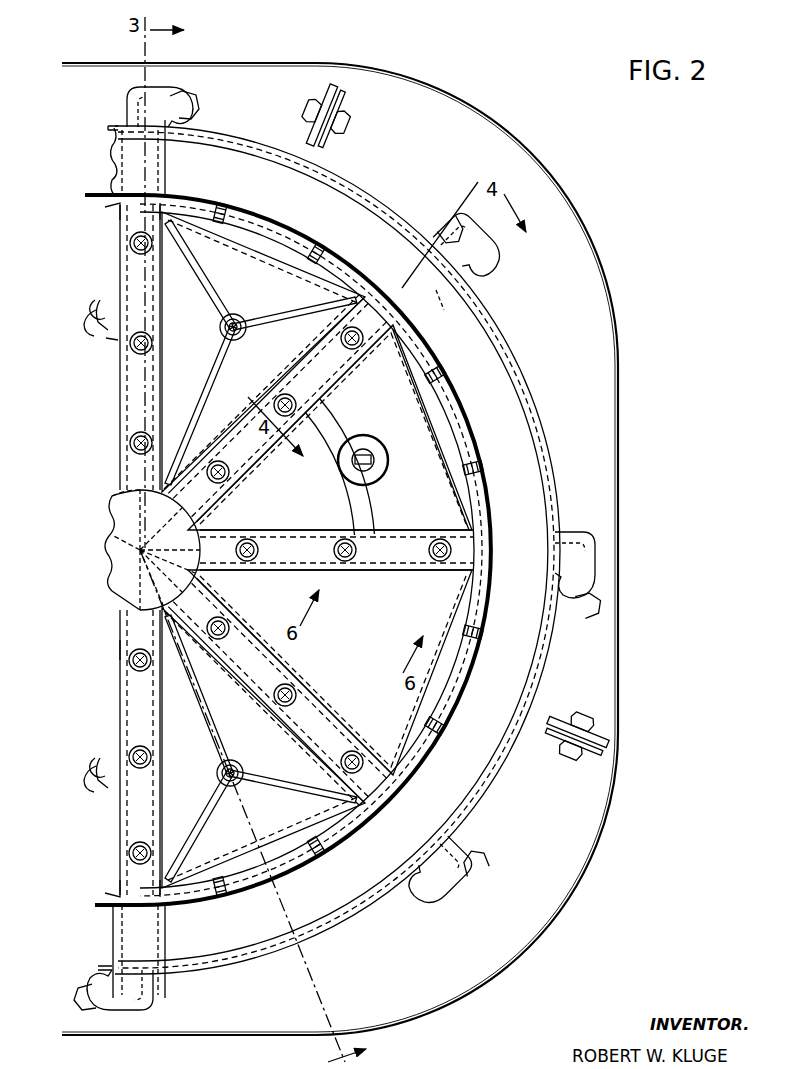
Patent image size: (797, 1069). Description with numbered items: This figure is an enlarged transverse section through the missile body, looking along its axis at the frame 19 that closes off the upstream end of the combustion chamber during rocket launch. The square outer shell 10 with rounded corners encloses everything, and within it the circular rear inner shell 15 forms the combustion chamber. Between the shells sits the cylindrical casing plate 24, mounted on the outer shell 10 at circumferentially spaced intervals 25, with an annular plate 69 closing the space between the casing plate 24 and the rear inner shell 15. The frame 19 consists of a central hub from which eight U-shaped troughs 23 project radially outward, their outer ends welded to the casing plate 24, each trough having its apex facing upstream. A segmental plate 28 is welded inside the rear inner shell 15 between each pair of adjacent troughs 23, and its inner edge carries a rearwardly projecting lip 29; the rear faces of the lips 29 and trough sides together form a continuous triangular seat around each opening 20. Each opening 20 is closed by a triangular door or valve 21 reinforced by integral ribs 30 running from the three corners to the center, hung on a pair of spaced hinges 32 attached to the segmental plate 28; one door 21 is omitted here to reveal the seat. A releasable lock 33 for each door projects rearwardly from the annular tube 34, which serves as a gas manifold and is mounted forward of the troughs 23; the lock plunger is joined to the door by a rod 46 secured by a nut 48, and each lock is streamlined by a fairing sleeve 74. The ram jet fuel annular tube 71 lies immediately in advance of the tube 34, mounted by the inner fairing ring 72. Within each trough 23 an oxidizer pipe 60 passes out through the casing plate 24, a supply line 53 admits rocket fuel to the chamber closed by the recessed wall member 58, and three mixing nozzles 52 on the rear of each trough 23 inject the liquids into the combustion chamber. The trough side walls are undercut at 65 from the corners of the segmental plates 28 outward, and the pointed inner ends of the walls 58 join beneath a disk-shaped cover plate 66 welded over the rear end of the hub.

The outer shell 10 is at (465, 95).
The rear inner shell 15 is at (432, 764).
The frame 19 is at (118, 644).
The openings 20 is at (352, 370).
The doors or valves 21 is at (263, 550).
The U-shaped troughs 23 is at (120, 372).
The cylindrical casing plate 24 is at (110, 128).
The mounting of casing plate 25 is at (338, 128).
The segmental plate 28 is at (275, 238).
The lip 29 is at (446, 440).
The reinforcing ribs 30 is at (270, 306).
The hinges 32 is at (440, 725).
The releasable lock 33 is at (380, 452).
The annular tube 34 is at (385, 510).
The rod 46 is at (222, 332).
The nut 48 is at (218, 778).
The mixing nozzles 52 is at (132, 252).
The supply line 53 is at (182, 103).
The wall member 58 is at (133, 396).
The pipe 60 is at (150, 90).
The undercuts 65 is at (448, 313).
The cover plate 66 is at (112, 538).
The annular plate 69 is at (112, 176).
The annular tube 71 is at (86, 318).
The inner fairing ring 72 is at (106, 340).
The fairing sleeve 74 is at (355, 490).